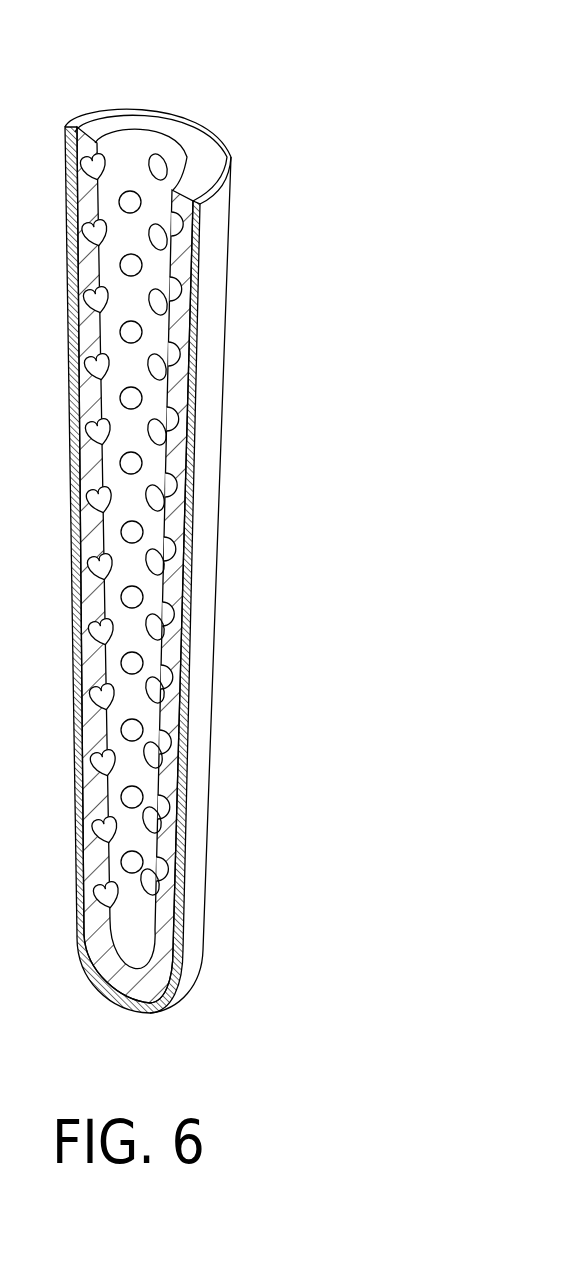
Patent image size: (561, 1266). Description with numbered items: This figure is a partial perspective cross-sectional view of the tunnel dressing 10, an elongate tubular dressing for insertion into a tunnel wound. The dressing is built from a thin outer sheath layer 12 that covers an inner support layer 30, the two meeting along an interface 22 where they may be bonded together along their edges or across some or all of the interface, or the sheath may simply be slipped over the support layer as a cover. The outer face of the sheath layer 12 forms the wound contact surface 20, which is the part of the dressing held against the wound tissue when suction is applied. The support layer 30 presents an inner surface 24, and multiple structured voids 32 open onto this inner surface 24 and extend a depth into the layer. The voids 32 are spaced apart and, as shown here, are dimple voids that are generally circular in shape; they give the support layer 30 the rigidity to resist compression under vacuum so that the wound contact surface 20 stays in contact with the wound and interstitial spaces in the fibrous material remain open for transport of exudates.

The tunnel dressing 10 is at (318, 148).
The outer sheath layer 12 is at (212, 137).
The wound contact surface 20 is at (210, 313).
The interface 22 is at (193, 378).
The inner surface 24 is at (162, 198).
The support layer 30 is at (177, 133).
The structured voids 32 is at (193, 460).